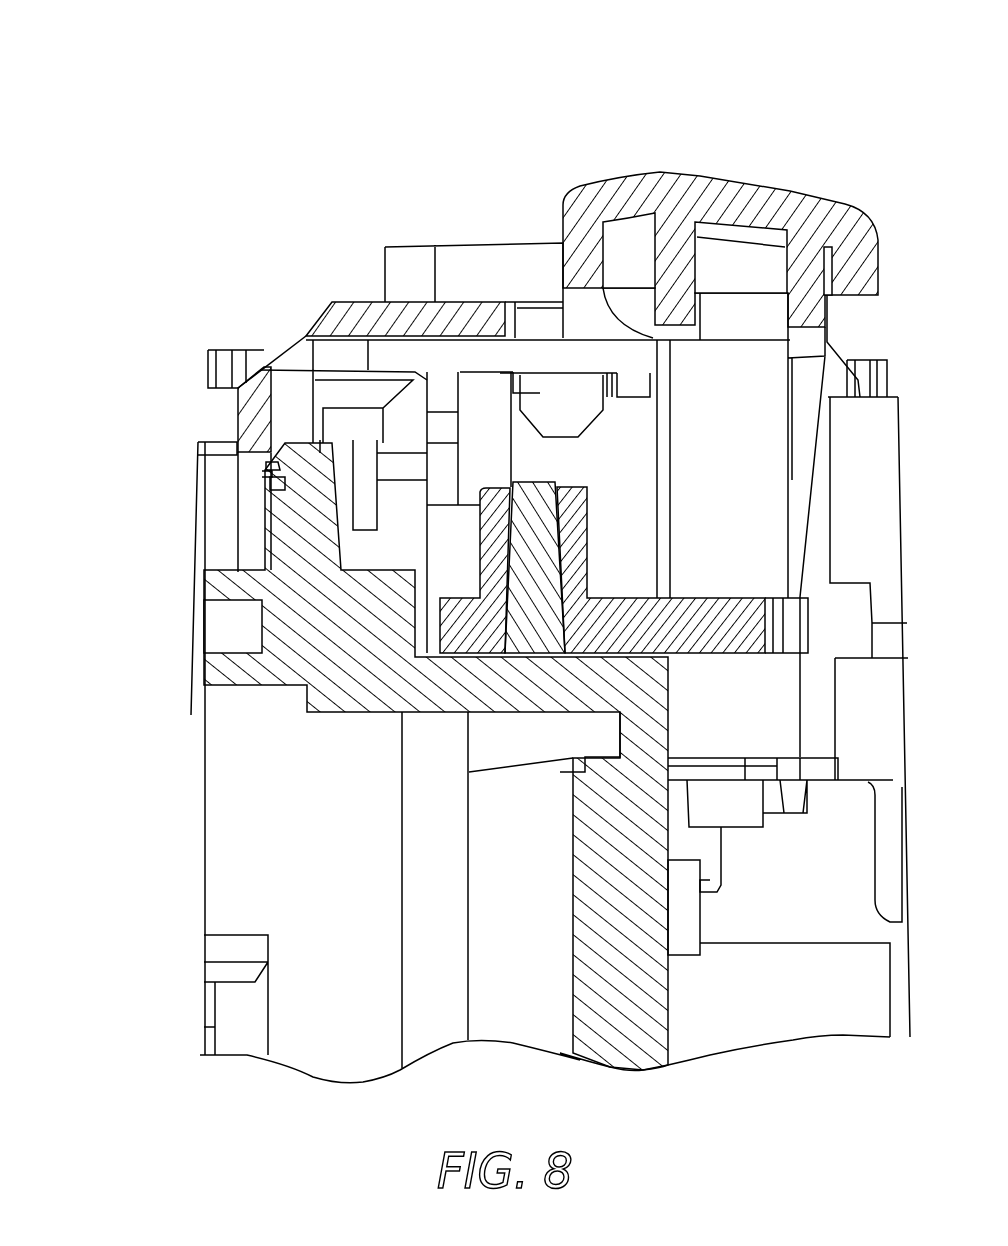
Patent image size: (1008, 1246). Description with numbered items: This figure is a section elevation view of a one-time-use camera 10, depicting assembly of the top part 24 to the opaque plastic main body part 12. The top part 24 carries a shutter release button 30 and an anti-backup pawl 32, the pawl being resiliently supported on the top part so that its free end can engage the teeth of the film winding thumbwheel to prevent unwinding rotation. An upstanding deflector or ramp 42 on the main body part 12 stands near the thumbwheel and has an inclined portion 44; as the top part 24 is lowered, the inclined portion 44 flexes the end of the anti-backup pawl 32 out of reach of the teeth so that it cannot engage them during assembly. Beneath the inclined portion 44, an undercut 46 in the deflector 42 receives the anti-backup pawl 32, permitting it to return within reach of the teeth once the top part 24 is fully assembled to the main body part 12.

The one-time-use camera 10 is at (484, 543).
The main body part 12 is at (204, 810).
The top part 24 is at (332, 302).
The shutter release button 30 is at (671, 172).
The anti-backup pawl 32 is at (243, 408).
The deflector 42 is at (262, 475).
The inclined portion 44 is at (266, 463).
The undercut 46 is at (272, 482).